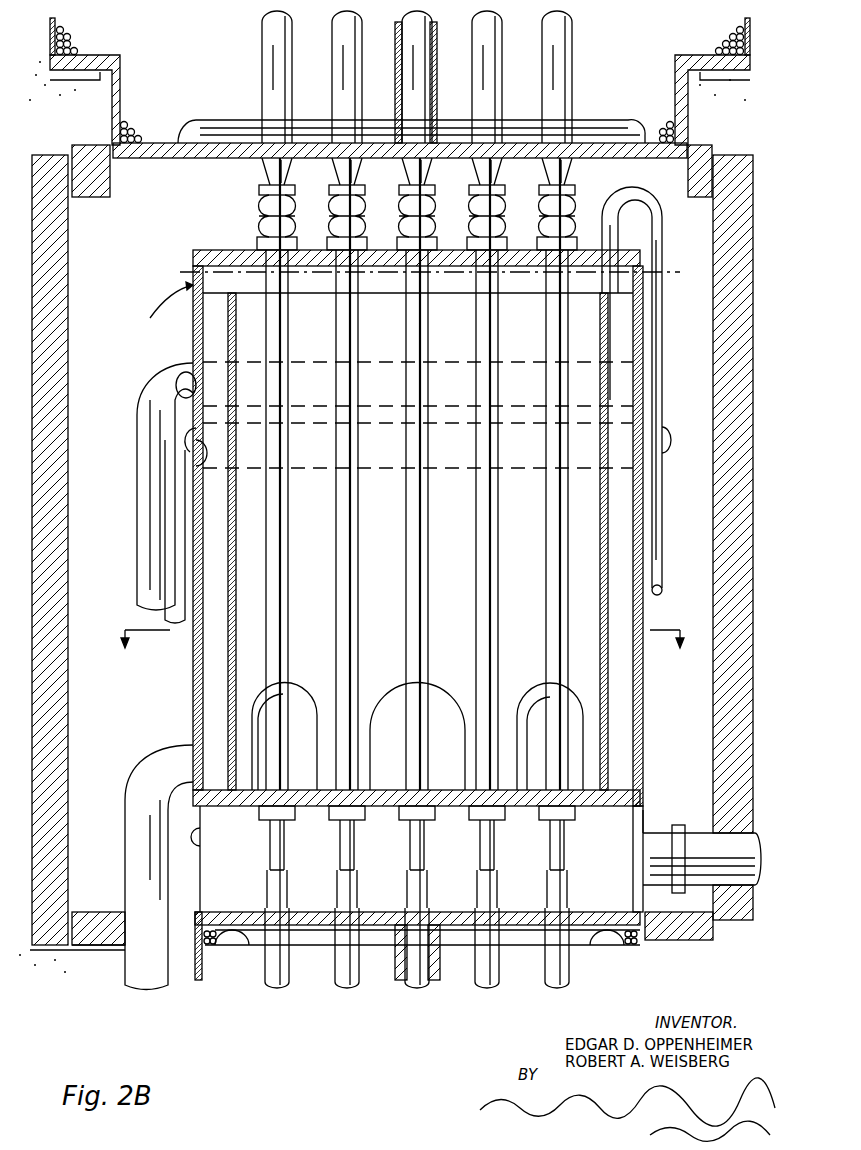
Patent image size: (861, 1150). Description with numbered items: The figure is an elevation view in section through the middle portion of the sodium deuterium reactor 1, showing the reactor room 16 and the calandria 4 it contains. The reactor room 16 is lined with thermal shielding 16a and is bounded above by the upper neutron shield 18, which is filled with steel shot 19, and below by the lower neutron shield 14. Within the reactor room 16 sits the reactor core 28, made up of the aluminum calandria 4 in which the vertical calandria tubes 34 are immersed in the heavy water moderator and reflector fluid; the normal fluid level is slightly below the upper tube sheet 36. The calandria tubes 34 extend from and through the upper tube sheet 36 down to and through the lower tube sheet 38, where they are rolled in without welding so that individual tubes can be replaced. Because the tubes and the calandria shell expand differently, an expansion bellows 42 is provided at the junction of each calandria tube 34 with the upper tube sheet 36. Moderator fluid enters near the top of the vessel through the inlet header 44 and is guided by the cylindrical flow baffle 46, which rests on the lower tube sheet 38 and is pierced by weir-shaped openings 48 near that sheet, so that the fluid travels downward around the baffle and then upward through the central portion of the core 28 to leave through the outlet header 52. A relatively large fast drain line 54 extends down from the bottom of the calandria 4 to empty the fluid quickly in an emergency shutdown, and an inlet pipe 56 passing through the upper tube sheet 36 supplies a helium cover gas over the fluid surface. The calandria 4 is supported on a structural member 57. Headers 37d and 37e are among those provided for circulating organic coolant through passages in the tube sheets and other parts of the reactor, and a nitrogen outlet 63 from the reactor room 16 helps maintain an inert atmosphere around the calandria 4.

The sodium deuterium reactor 1 is at (352, 986).
The calandria 4 is at (401, 477).
The lower neutron shield 14 is at (225, 975).
The reactor room 16 is at (104, 208).
The thermal shielding 16a is at (642, 158).
The upper neutron shield 18 is at (163, 50).
The steel shot 19 is at (134, 126).
The reactor core 28 is at (389, 561).
The calandria tubes 34 is at (338, 625).
The upper tube sheet 36 is at (232, 250).
The inlet and outlet header 37d is at (228, 121).
The inlet and outlet header 37e is at (260, 946).
The lower tube sheet 38 is at (200, 803).
The expansion bellows 42 is at (338, 210).
The inlet header 44 is at (665, 442).
The cylindrical flow baffle 46 is at (228, 695).
The weir-shaped openings 48 is at (542, 690).
The outlet header 52 is at (192, 366).
The fast drain line 54 is at (125, 970).
The inlet pipe 56 is at (660, 386).
The structural member 57 is at (202, 834).
The nitrogen outlet 63 is at (706, 833).